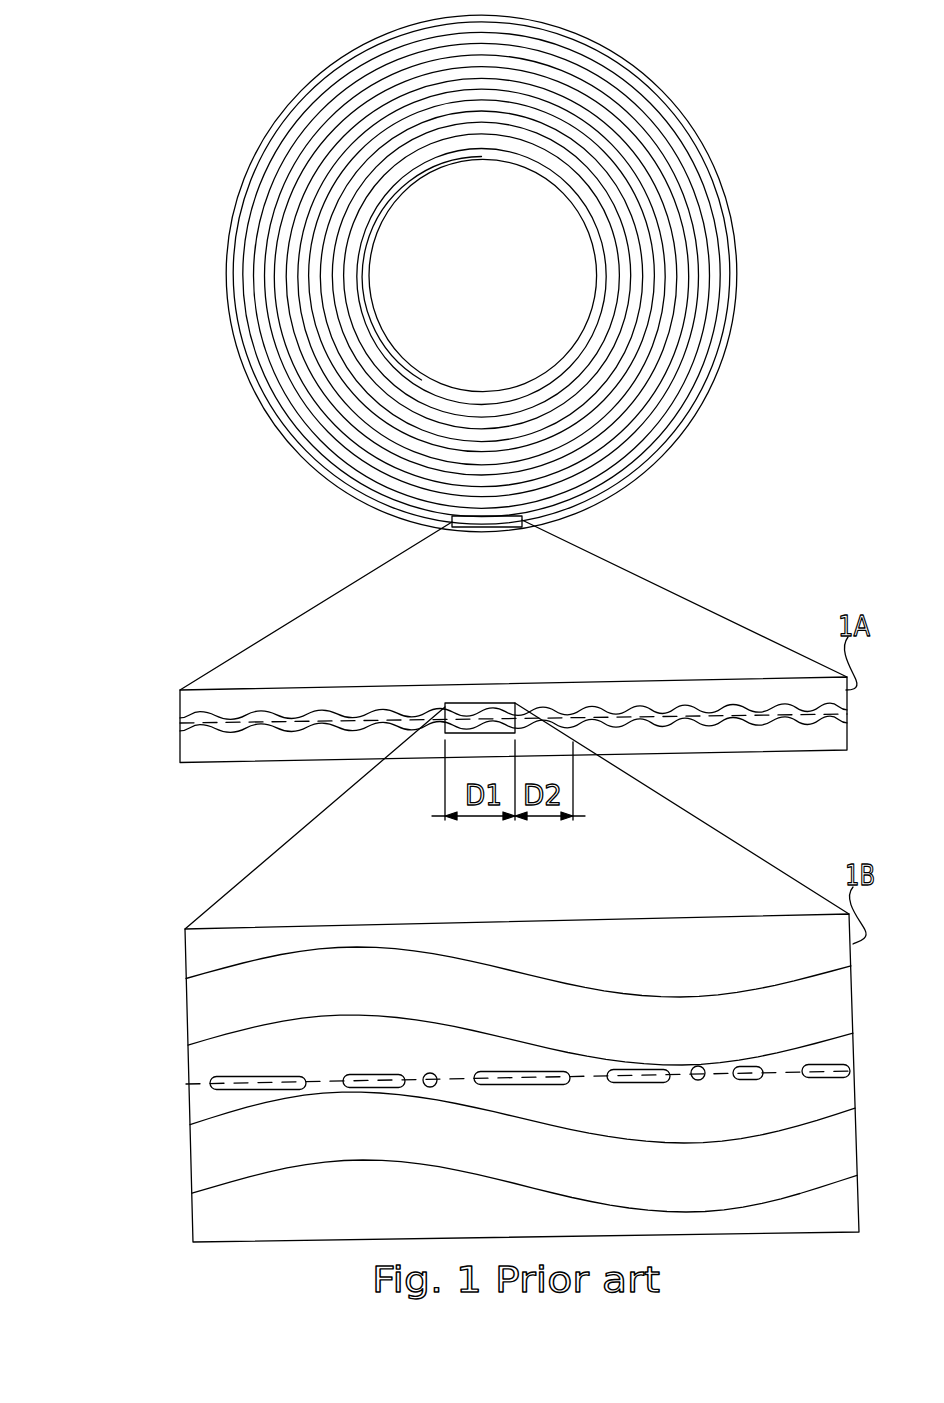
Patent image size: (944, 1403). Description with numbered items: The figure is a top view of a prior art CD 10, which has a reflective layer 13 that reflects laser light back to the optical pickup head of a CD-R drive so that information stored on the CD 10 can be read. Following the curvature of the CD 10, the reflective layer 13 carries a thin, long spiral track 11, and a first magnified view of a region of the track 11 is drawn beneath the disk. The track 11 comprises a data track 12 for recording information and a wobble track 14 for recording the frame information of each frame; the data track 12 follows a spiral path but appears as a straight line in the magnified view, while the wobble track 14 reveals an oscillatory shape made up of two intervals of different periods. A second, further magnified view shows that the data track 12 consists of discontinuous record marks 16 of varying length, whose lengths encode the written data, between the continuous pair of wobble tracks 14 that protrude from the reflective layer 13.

The CD 10 is at (262, 107).
The spiral track 11 is at (368, 496).
The data track 12 is at (180, 720).
The reflective layer 13 is at (638, 478).
The wobble track 14 is at (247, 714).
The record marks 16 is at (436, 1069).